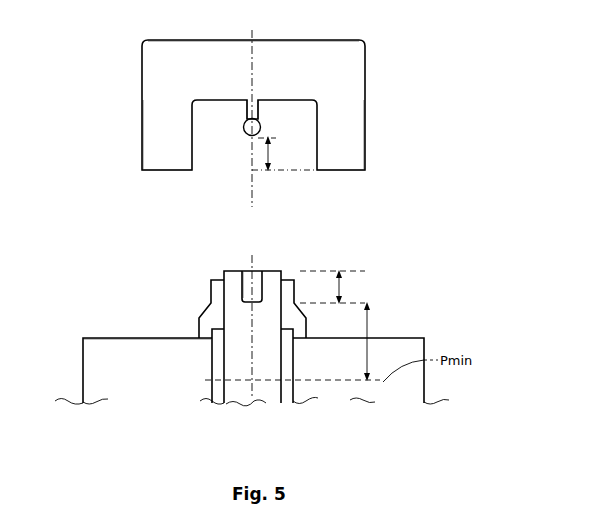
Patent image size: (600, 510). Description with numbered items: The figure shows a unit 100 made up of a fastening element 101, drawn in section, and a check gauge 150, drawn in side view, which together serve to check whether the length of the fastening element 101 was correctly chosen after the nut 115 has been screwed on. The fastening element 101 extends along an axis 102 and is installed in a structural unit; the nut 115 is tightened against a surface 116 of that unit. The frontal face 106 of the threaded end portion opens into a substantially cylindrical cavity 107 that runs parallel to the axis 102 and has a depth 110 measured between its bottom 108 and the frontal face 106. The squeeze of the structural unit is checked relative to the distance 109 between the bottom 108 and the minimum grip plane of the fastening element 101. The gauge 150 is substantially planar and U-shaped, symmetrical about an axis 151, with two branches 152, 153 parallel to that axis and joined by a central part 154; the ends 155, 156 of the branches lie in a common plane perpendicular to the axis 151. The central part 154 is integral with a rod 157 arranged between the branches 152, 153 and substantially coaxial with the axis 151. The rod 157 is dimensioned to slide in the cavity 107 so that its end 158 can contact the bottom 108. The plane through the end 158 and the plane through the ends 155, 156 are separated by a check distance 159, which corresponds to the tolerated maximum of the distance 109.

The unit 100 is at (80, 455).
The fastening element 101 is at (272, 407).
The axis 102 is at (251, 374).
The frontal face 106 is at (258, 298).
The cavity 107 is at (247, 301).
The bottom 108 is at (255, 306).
The distance 109 is at (88, 360).
The depth 110 is at (345, 280).
The nut 115 is at (218, 318).
The surface 116 is at (110, 337).
The check gauge 150 is at (378, 92).
The axis 151 is at (252, 197).
The branch 152 is at (152, 162).
The branch 153 is at (363, 161).
The central part 154 is at (200, 52).
The end 155 is at (167, 171).
The end 156 is at (333, 171).
The rod 157 is at (256, 112).
The end 158 is at (246, 139).
The check distance 159 is at (270, 142).